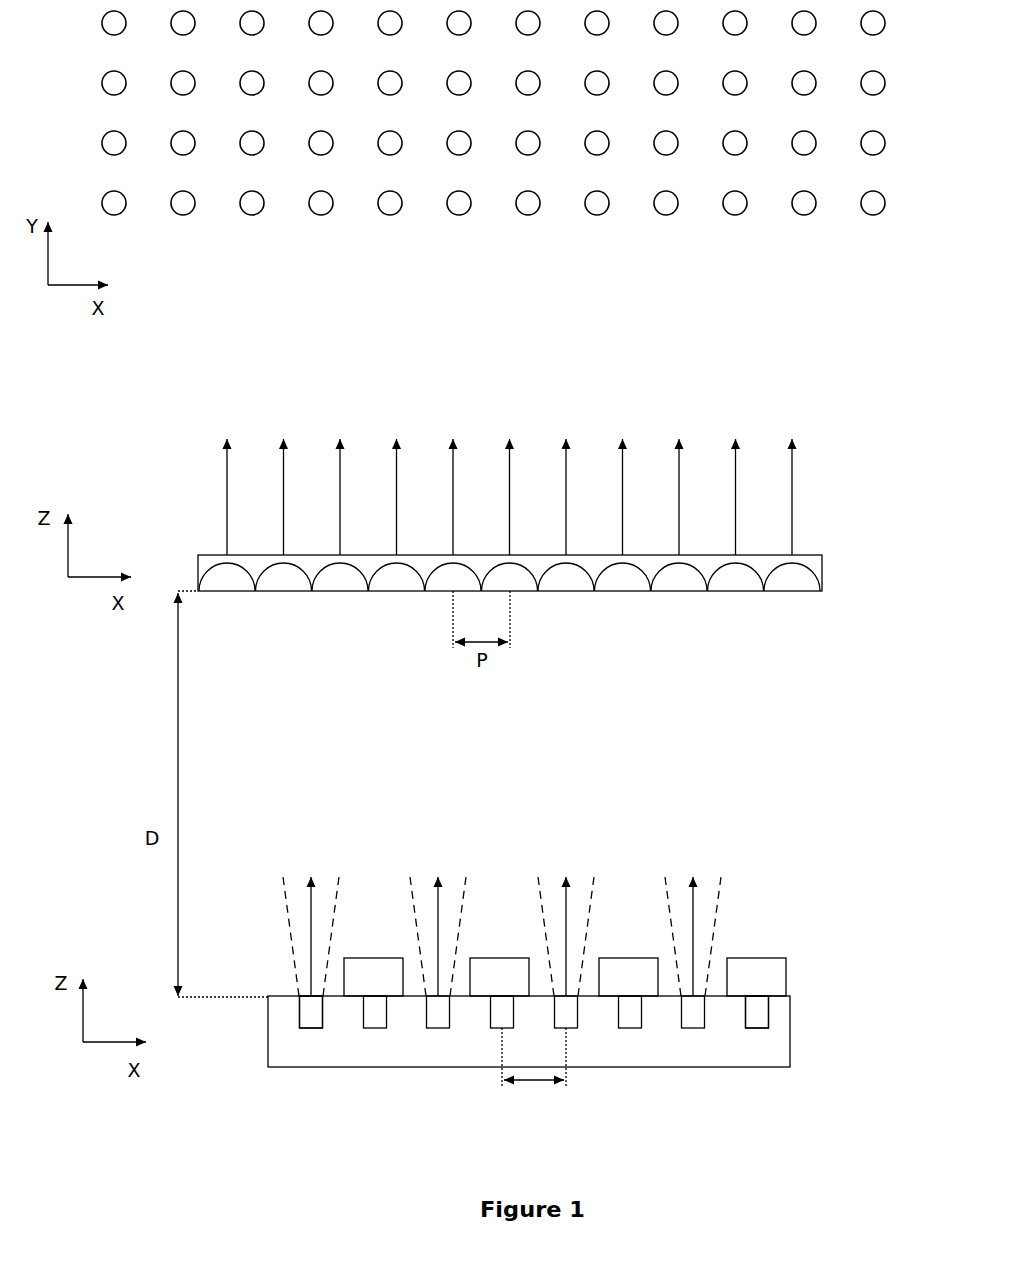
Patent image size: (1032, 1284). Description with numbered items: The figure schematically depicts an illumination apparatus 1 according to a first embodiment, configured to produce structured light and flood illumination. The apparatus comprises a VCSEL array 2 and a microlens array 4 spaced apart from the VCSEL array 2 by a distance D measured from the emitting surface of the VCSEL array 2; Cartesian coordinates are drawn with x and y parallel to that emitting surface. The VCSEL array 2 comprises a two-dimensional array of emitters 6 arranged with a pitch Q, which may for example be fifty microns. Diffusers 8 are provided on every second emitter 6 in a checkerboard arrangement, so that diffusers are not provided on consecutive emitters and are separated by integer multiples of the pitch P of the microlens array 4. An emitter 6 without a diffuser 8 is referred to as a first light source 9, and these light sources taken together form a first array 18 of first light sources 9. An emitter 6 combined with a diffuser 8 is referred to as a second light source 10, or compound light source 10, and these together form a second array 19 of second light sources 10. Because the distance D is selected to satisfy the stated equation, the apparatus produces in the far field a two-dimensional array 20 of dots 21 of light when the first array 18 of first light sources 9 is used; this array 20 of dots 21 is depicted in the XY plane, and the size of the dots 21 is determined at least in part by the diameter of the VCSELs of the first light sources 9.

The illumination apparatus 1 is at (578, 1013).
The VCSEL array 2 is at (772, 1043).
The microlens array 4 is at (817, 563).
The emitter 6 is at (497, 1012).
The diffuser 8 is at (368, 976).
The first light source 9 is at (307, 1003).
The second light source 10 is at (762, 1005).
The first array of first light sources 18 is at (441, 1017).
The second array of second light sources 19 is at (760, 1013).
The two-dimensional array of dots 20 is at (512, 160).
The dot of light 21 is at (597, 202).